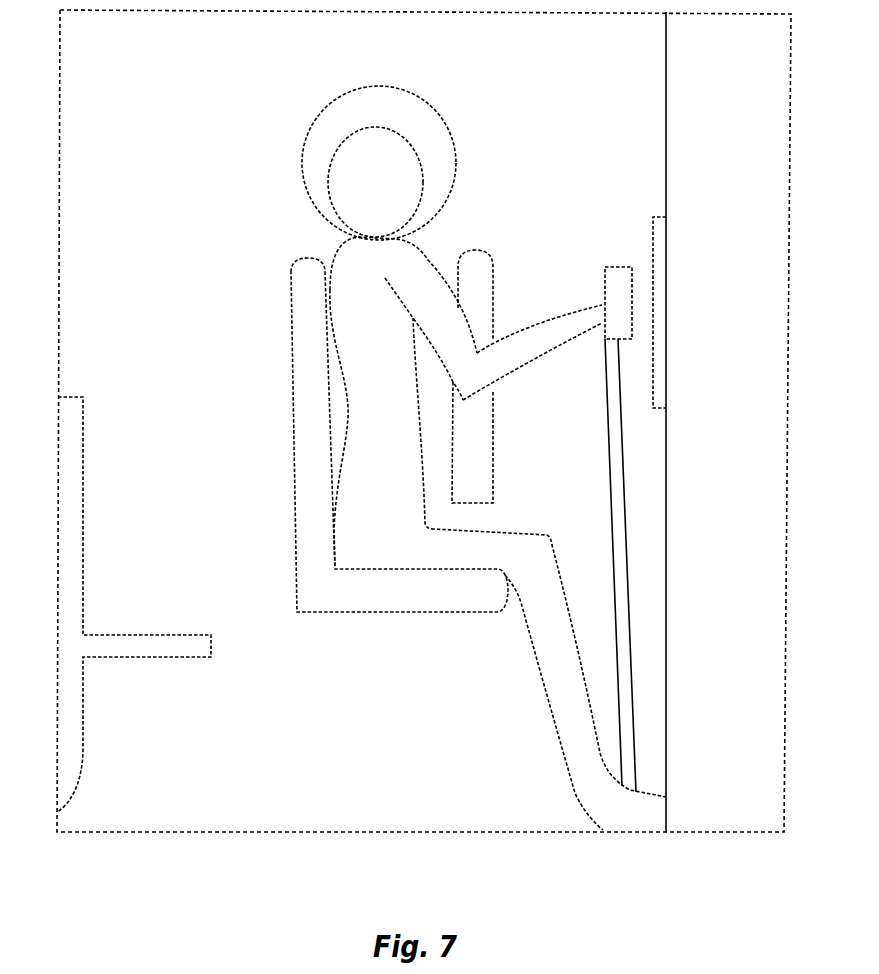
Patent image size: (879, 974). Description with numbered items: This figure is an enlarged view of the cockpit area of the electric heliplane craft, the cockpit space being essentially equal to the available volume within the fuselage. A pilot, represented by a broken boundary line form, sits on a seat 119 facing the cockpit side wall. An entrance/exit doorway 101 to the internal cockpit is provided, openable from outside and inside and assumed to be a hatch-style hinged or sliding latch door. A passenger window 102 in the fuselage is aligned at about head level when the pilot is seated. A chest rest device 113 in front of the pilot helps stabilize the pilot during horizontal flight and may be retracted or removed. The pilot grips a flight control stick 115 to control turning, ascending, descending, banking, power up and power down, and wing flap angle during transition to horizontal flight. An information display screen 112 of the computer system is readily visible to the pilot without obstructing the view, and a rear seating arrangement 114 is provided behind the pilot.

The doorway 101 is at (667, 450).
The passenger window 102 is at (303, 160).
The information display screen 112 is at (667, 312).
The chest rest device 113 is at (475, 250).
The rear seating arrangement 114 is at (113, 634).
The flight control stick 115 is at (615, 263).
The seat 119 is at (293, 392).